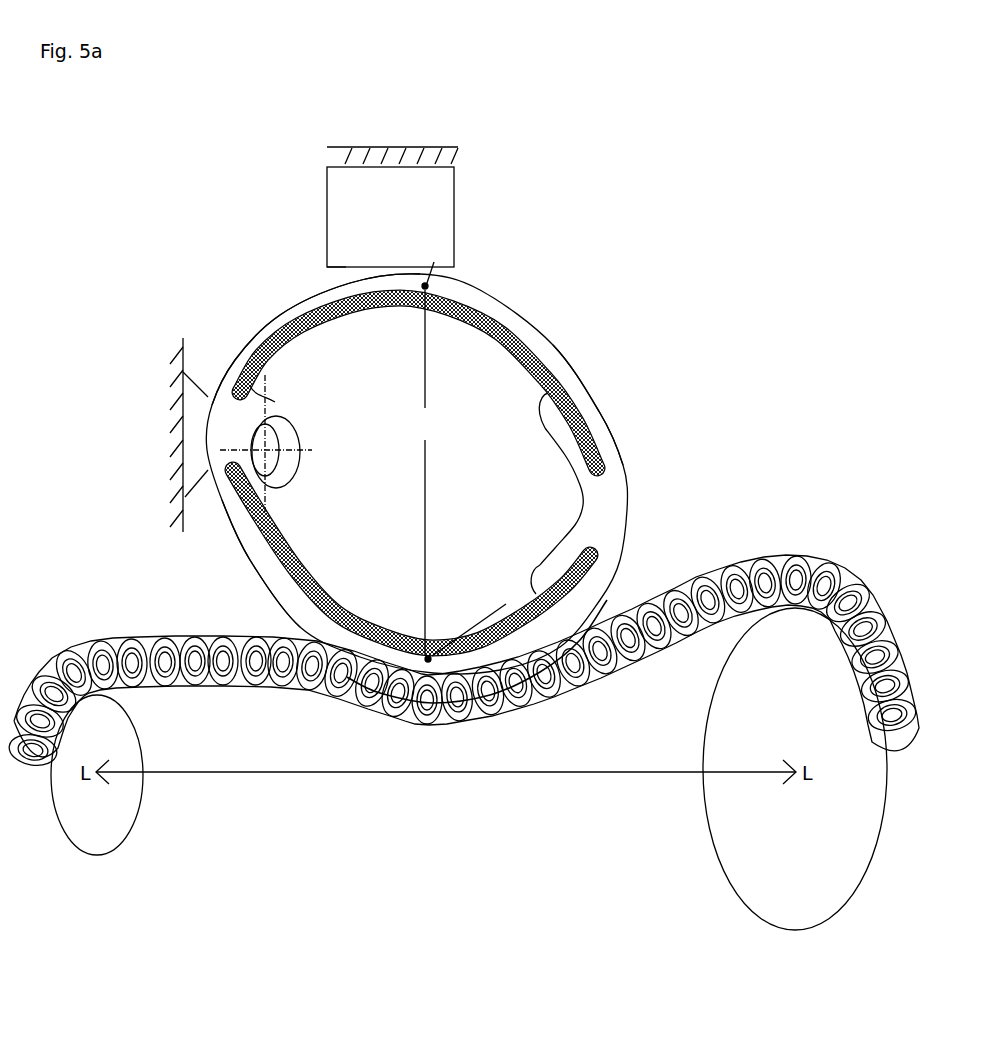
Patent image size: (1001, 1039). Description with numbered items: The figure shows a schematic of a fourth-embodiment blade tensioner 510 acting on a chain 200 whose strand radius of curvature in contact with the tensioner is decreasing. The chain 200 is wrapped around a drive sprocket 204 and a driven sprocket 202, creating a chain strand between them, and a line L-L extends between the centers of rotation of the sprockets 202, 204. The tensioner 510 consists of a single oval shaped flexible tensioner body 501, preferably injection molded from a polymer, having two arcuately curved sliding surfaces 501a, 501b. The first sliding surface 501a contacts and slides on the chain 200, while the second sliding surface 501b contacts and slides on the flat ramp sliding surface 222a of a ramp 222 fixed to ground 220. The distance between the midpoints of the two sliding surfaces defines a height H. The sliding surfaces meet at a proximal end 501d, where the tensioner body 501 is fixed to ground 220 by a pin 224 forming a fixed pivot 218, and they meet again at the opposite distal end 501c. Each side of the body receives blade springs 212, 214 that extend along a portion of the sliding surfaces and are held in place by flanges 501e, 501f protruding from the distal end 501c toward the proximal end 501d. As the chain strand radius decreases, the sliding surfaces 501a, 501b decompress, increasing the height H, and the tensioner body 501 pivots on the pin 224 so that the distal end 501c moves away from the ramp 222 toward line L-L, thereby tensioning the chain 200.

The chain 200 is at (266, 694).
The driven sprocket 202 is at (795, 769).
The drive sprocket 204 is at (97, 775).
The blade spring 212 is at (306, 579).
The blade spring 214 is at (378, 318).
The fixed pivot 218 is at (272, 428).
The ground 220 is at (378, 143).
The ramp 222 is at (361, 217).
The ramp sliding surface 222a is at (346, 266).
The pin 224 is at (271, 457).
The tensioner body 501 is at (503, 323).
The first sliding surface 501a is at (254, 558).
The second sliding surface 501b is at (275, 312).
The distal end 501c is at (600, 413).
The proximal end 501d is at (240, 340).
The flange 501e is at (540, 424).
The flange 501f is at (540, 568).
The tensioner 510 is at (373, 420).